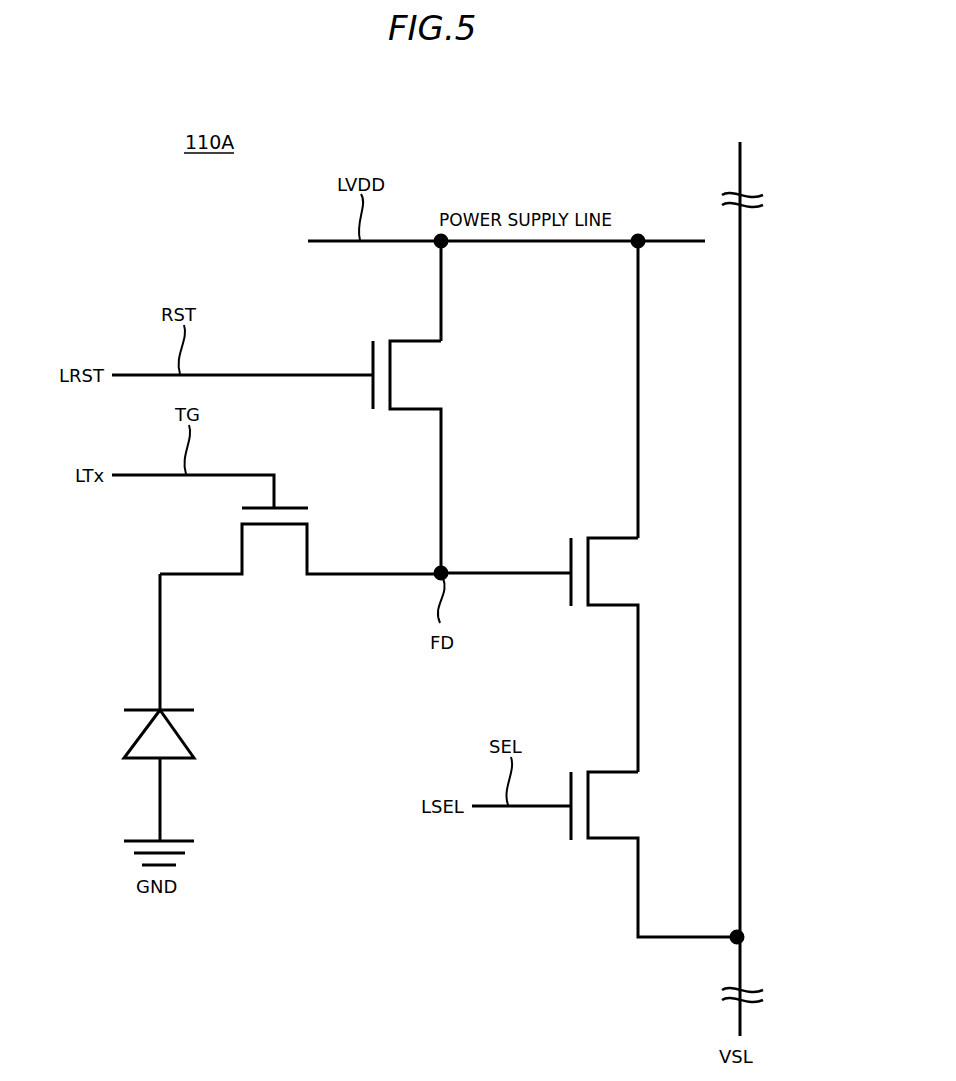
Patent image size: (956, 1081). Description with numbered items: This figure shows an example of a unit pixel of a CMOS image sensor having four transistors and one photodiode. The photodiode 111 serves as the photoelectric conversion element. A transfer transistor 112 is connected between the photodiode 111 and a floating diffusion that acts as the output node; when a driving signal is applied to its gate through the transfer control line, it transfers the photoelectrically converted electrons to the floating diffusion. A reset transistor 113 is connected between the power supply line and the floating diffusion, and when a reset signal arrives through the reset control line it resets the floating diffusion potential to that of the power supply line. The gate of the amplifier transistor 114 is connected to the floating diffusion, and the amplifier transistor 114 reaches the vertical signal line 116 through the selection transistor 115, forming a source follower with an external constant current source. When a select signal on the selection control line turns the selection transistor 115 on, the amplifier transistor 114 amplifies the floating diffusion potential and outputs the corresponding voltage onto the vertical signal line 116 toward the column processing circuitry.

The photodiode 111 is at (142, 733).
The transfer transistor 112 is at (283, 558).
The reset transistor 113 is at (424, 371).
The amplifier transistor 114 is at (605, 580).
The selection transistor 115 is at (605, 812).
The vertical signal line 116 is at (740, 695).